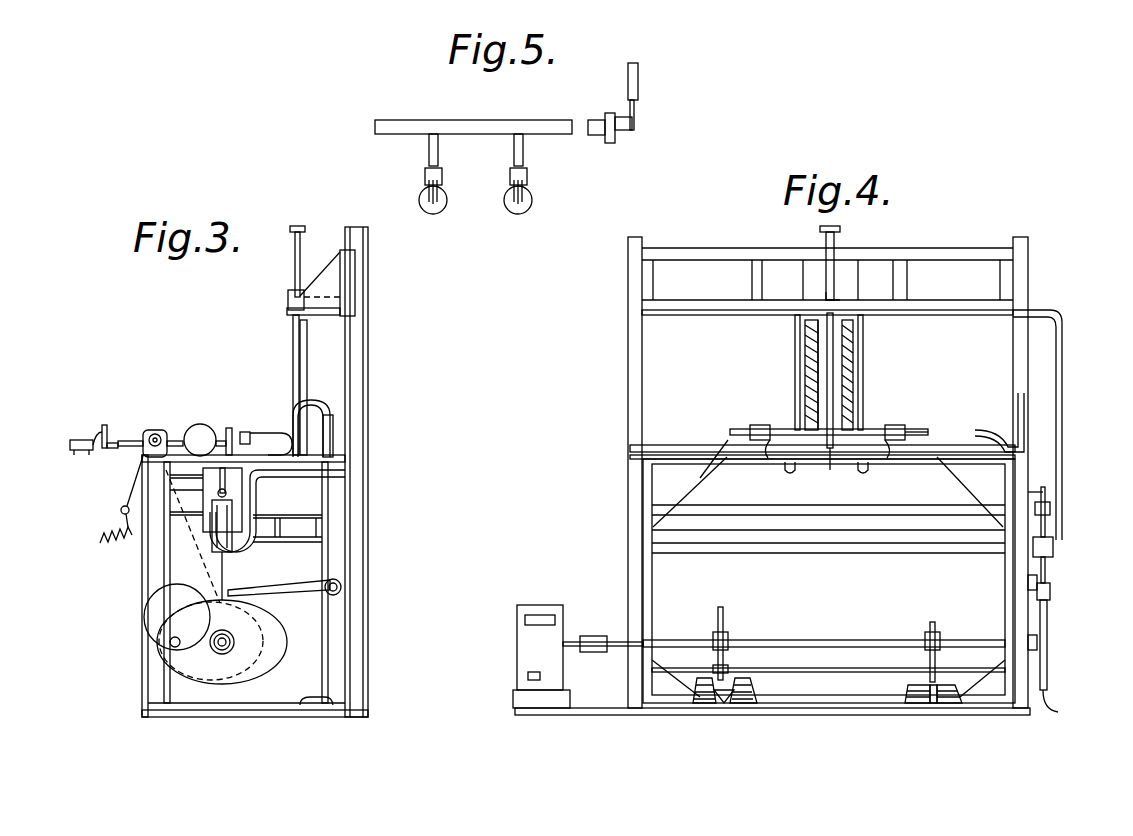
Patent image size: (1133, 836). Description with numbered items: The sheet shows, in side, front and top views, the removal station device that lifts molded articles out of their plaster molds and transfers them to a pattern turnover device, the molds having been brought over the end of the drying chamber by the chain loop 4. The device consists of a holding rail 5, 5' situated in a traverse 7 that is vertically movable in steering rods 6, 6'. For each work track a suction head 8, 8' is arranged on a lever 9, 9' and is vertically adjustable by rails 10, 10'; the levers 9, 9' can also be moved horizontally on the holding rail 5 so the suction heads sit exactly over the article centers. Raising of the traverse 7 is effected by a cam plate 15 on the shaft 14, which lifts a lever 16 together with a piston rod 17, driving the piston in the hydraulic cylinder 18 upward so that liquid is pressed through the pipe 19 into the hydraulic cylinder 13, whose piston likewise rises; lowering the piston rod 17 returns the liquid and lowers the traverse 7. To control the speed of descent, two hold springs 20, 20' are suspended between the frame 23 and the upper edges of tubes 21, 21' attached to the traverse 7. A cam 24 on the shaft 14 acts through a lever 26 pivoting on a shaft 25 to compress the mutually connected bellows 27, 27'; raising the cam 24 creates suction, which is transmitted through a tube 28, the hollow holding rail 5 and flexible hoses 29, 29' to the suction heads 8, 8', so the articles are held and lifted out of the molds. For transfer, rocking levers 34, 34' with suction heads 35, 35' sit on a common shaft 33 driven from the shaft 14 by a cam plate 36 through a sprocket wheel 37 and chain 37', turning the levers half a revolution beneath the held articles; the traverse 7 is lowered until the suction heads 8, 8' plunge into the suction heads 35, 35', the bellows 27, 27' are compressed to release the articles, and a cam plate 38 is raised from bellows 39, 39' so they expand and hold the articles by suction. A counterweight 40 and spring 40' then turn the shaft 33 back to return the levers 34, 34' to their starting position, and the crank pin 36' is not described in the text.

In FIG. 3, the chain loop 4 is at (121, 510).
In FIG. 3, the holding rail 5 is at (271, 412).
In FIG. 4, the holding rail 5' is at (702, 469).
In FIG. 4, the steering rod 6 is at (776, 372).
In FIG. 3, the steering rod 6' is at (272, 385).
In FIG. 4, the steering rod 6' is at (882, 372).
In FIG. 3, the traverse 7 is at (292, 425).
In FIG. 4, the traverse 7 is at (830, 462).
In FIG. 4, the suction head 8 is at (782, 481).
In FIG. 4, the suction head 8' is at (878, 481).
In FIG. 3, the lever 9 is at (233, 424).
In FIG. 4, the lever 9 is at (809, 422).
In FIG. 4, the lever 9' is at (936, 421).
In FIG. 3, the rail 10 is at (222, 412).
In FIG. 4, the rail 10 is at (921, 507).
In FIG. 4, the rail 10' is at (911, 417).
In FIG. 3, the hydraulic cylinder 13 is at (300, 262).
In FIG. 4, the hydraulic cylinder 13 is at (826, 242).
In FIG. 3, the shaft 14 is at (233, 639).
In FIG. 4, the shaft 14 is at (856, 650).
In FIG. 3, the cam plate 15 is at (182, 660).
In FIG. 4, the cam plate 15 is at (1048, 645).
In FIG. 3, the lever 16 is at (312, 595).
In FIG. 3, the piston rod 17 is at (215, 585).
In FIG. 4, the piston rod 17 is at (1046, 578).
In FIG. 3, the hydraulic cylinder 18 is at (215, 548).
In FIG. 4, the hydraulic cylinder 18 is at (1054, 547).
In FIG. 3, the pipe 19 is at (368, 354).
In FIG. 4, the pipe 19 is at (1060, 305).
In FIG. 4, the hold spring 20 is at (773, 375).
In FIG. 4, the hold spring 20' is at (902, 375).
In FIG. 4, the tube 21 is at (791, 380).
In FIG. 3, the tube 21' is at (321, 387).
In FIG. 4, the tube 21' is at (874, 375).
In FIG. 3, the frame 23 is at (165, 468).
In FIG. 4, the frame 23 is at (640, 462).
In FIG. 4, the cam 24 is at (720, 612).
In FIG. 4, the shaft 25 is at (802, 673).
In FIG. 4, the lever 26 is at (722, 703).
In FIG. 4, the bellows 27 is at (690, 715).
In FIG. 4, the bellows 27' is at (754, 714).
In FIG. 3, the tube 28 is at (333, 420).
In FIG. 4, the tube 28 is at (1026, 400).
In FIG. 4, the flexible hose 29 is at (750, 468).
In FIG. 4, the flexible hose 29' is at (918, 469).
In FIG. 5, the shaft 33 is at (383, 128).
In FIG. 3, the shaft 33 is at (152, 430).
In FIG. 5, the rocking lever 34 is at (406, 174).
In FIG. 3, the rocking lever 34 is at (108, 411).
In FIG. 5, the rocking lever 34' is at (497, 174).
In FIG. 3, the rocking lever 34' is at (108, 421).
In FIG. 3, the suction head 35 is at (65, 417).
In FIG. 3, the suction head 35' is at (62, 431).
In FIG. 4, the cam plate 36 is at (1063, 709).
In FIG. 3, the crank pin 36' is at (183, 641).
In FIG. 3, the sprocket wheel 37 is at (155, 617).
In FIG. 3, the chain 37' is at (148, 491).
In FIG. 4, the cam plate 38 is at (933, 703).
In FIG. 4, the bellows 39 is at (908, 721).
In FIG. 4, the bellows 39' is at (964, 719).
In FIG. 5, the counterweight 40 is at (650, 103).
In FIG. 3, the counterweight 40 is at (195, 422).
In FIG. 3, the spring 40' is at (102, 537).